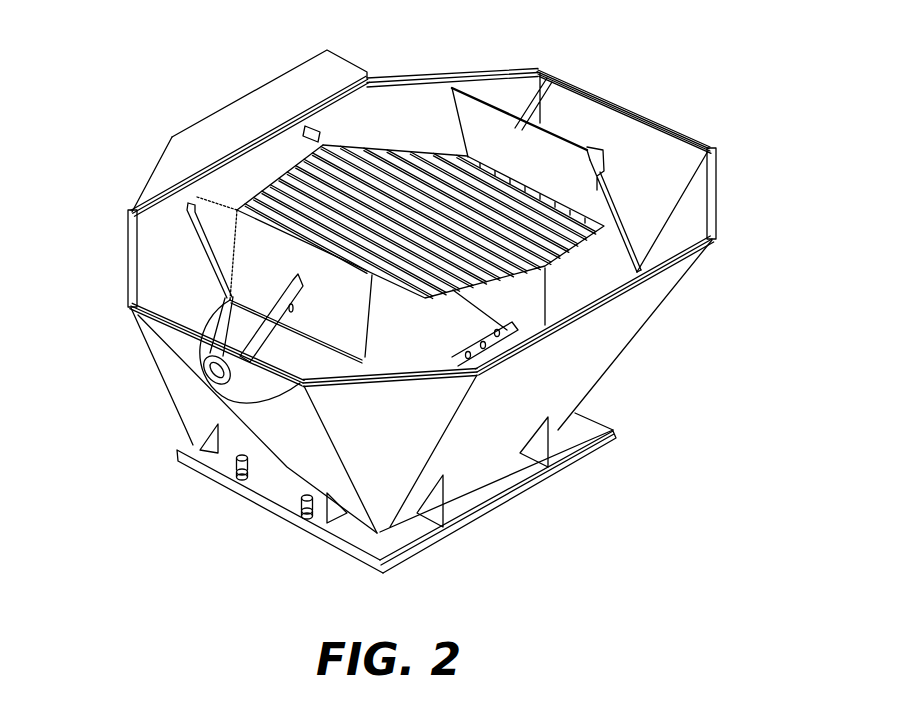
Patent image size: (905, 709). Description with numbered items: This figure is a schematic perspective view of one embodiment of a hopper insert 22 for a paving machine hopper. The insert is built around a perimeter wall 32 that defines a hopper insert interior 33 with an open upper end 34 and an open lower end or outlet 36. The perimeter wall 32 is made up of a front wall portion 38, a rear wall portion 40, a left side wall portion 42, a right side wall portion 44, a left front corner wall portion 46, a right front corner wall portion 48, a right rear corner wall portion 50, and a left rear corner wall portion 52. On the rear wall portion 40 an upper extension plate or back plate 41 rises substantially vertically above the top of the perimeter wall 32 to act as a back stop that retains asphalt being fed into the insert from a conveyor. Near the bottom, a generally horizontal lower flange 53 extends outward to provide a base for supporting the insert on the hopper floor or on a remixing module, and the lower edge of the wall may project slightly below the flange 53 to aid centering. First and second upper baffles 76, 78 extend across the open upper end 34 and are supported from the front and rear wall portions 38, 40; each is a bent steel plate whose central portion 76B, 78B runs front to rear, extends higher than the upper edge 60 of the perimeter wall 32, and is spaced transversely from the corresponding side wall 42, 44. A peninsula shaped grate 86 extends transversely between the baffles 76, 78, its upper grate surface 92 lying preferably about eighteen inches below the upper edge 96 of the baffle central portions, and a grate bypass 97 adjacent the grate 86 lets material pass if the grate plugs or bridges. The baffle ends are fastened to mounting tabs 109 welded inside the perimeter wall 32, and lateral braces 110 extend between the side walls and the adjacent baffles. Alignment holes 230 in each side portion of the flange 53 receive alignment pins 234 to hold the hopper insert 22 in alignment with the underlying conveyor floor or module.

The hopper insert 22 is at (588, 45).
The perimeter wall 32 is at (595, 347).
The hopper insert interior 33 is at (577, 142).
The open upper end 34 is at (639, 271).
The open lower end or outlet 36 is at (210, 470).
The front wall portion 38 is at (573, 385).
The rear wall portion 40 is at (283, 155).
The upper extension plate or back plate 41 is at (203, 143).
The left side wall portion 42 is at (680, 173).
The right side wall portion 44 is at (305, 447).
The left front corner wall portion 46 is at (692, 222).
The right front corner wall portion 48 is at (412, 423).
The right rear corner wall portion 50 is at (130, 275).
The left rear corner wall portion 52 is at (505, 92).
The lower flange 53 is at (410, 532).
The upper edge of the perimeter wall 60 is at (533, 68).
The first upper baffle 76 is at (563, 110).
The central portion of the first upper baffle 76B is at (620, 221).
The second upper baffle 78 is at (200, 376).
The central portion of the second upper baffle 78B is at (216, 370).
The grate 86 is at (367, 157).
The upper grate surface 92 is at (572, 279).
The upper edge of the baffle central portion 96 is at (672, 160).
The grate bypass 97 is at (576, 283).
The mounting tab 109 is at (282, 157).
The lateral brace 110 is at (316, 362).
The alignment hole 230 is at (236, 468).
The alignment pin 234 is at (243, 477).